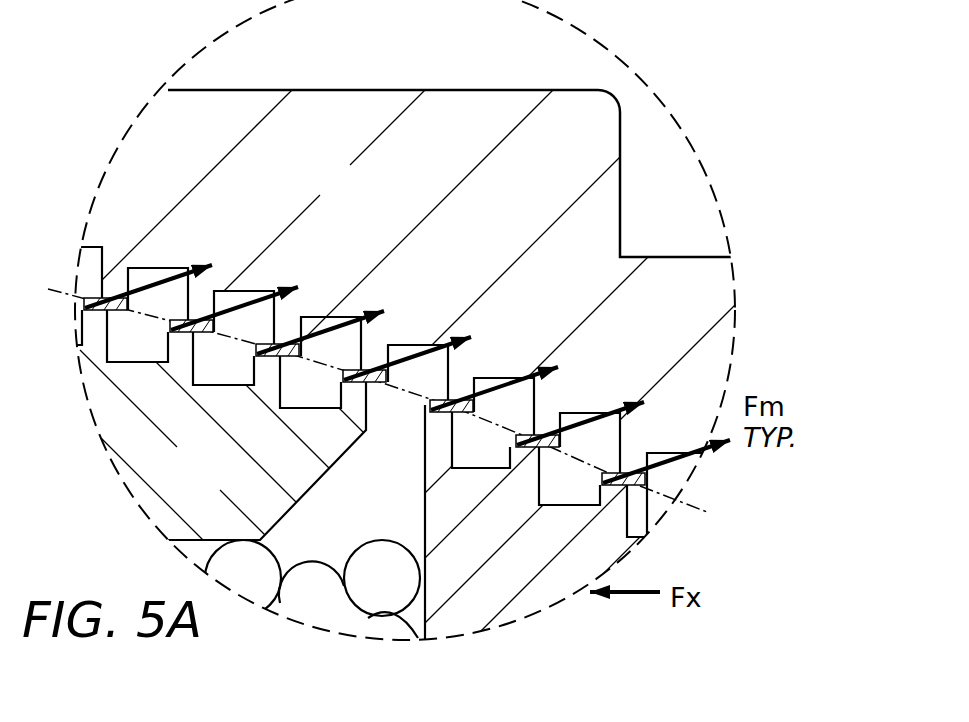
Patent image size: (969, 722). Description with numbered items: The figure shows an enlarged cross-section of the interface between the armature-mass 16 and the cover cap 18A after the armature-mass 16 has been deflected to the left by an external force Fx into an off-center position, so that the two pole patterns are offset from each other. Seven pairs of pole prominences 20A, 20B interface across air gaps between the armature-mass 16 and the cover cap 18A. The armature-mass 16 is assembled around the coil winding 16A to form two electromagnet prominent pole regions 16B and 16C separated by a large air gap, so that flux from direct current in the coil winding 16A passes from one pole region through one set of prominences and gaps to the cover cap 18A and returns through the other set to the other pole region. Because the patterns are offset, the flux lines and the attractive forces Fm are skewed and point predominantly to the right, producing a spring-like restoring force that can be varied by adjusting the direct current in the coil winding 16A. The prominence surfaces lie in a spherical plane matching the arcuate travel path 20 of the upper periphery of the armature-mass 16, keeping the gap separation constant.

The armature-mass 16 is at (103, 455).
The coil winding 16A is at (350, 619).
The electromagnet prominent pole region 16B is at (237, 484).
The electromagnet prominent pole region 16C is at (517, 572).
The cover cap 18A is at (385, 199).
The arcuate travel path 20 is at (64, 291).
The pole prominence 20A is at (563, 427).
The pole prominence 20B is at (538, 448).